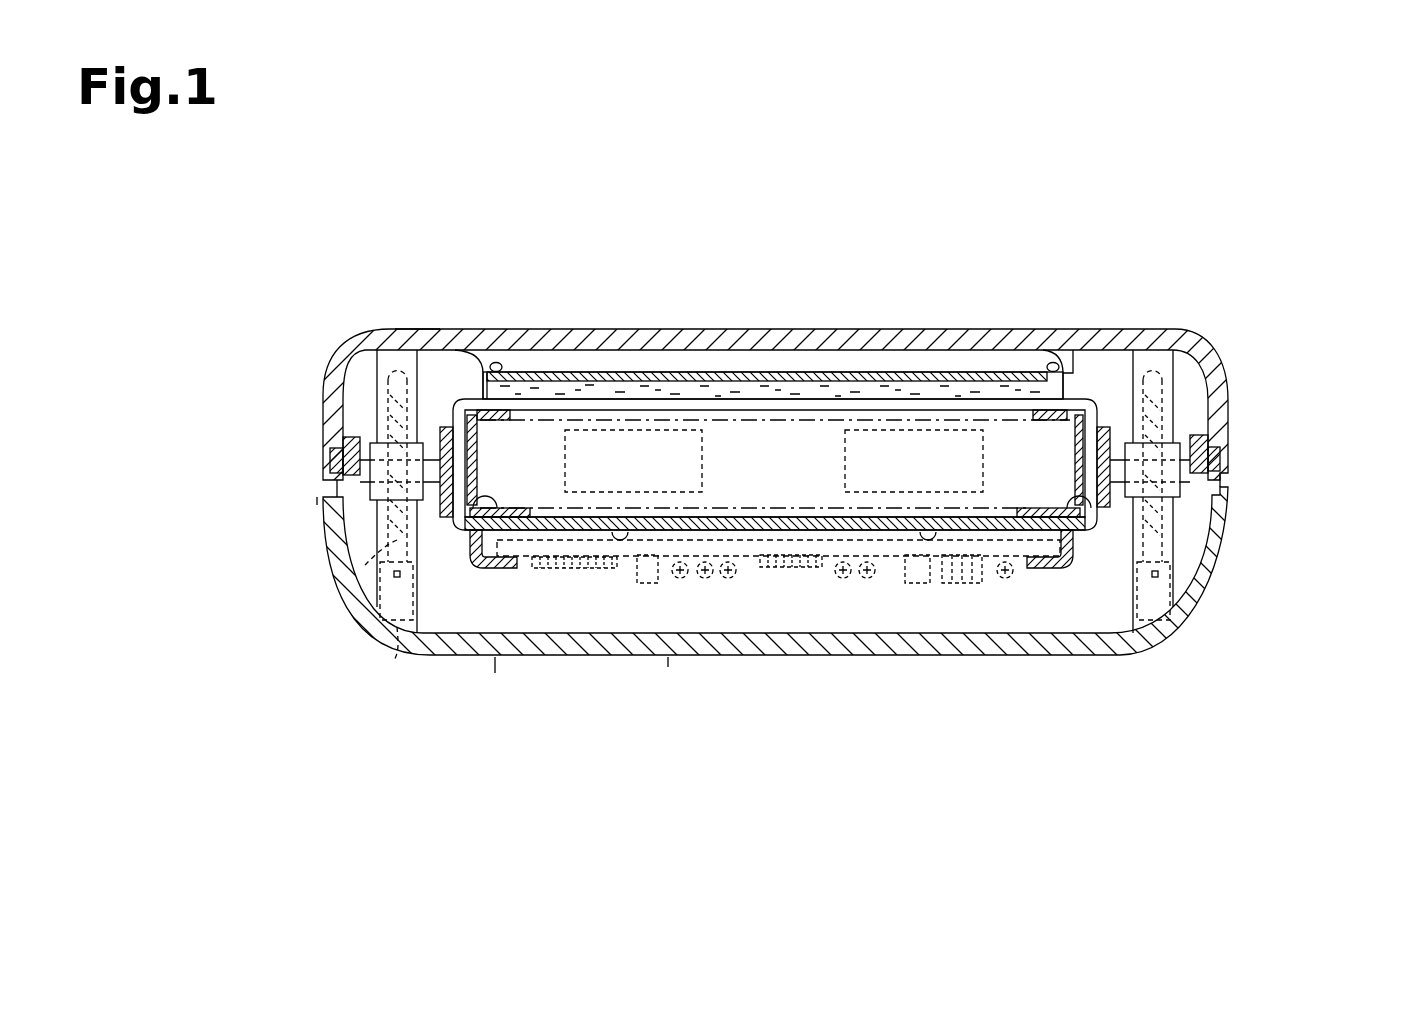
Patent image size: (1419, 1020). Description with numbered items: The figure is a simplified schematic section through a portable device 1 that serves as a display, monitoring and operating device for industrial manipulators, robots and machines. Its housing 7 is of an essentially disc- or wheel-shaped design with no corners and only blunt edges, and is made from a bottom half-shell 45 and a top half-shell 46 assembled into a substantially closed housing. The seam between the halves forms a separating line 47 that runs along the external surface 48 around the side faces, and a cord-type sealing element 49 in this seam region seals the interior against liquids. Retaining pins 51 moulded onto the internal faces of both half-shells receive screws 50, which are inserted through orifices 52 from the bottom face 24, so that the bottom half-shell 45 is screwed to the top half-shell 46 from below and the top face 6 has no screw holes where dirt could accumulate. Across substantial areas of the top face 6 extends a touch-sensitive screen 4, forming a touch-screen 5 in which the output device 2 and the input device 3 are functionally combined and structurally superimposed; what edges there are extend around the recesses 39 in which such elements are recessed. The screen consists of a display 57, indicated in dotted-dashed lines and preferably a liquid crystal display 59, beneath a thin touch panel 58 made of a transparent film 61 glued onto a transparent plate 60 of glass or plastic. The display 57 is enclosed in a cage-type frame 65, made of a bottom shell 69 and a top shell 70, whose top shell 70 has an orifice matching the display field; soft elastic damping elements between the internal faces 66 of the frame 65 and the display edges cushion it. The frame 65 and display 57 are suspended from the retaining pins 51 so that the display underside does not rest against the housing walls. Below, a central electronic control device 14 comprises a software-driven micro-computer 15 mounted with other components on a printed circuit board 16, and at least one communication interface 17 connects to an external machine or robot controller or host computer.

The portable device 1 is at (789, 428).
The output device 2 is at (847, 322).
The input device 3 is at (957, 358).
The touch-sensitive screen 4 is at (702, 362).
The touch-screen 5 is at (668, 316).
The top face 6 is at (413, 287).
The housing 7 is at (1207, 327).
The central electronic control device 14 is at (778, 691).
The micro-computer 15 is at (762, 567).
The printed circuit board 16 is at (890, 548).
The communication interface 17 is at (962, 590).
The bottom face 24 is at (495, 657).
The recesses 39 is at (502, 352).
The bottom half-shell 45 is at (1227, 590).
The top half-shell 46 is at (847, 356).
The separating line 47 is at (1240, 460).
The external surface 48 is at (317, 500).
The sealing element 49 is at (347, 440).
The screws 50 is at (397, 540).
The retaining pins 51 is at (380, 380).
The orifices 52 is at (393, 662).
The display 57 is at (762, 445).
The touch panel 58 is at (477, 387).
The liquid crystal display 59 is at (808, 447).
The plate 60 is at (590, 370).
The film 61 is at (638, 373).
The frame 65 is at (1108, 547).
The internal faces 66 is at (467, 513).
The bottom shell 69 is at (1097, 540).
The top shell 70 is at (1062, 398).